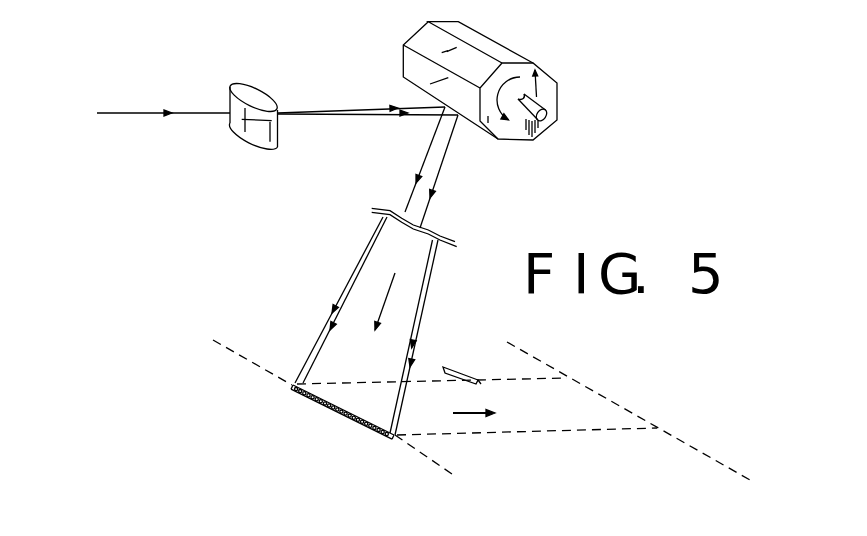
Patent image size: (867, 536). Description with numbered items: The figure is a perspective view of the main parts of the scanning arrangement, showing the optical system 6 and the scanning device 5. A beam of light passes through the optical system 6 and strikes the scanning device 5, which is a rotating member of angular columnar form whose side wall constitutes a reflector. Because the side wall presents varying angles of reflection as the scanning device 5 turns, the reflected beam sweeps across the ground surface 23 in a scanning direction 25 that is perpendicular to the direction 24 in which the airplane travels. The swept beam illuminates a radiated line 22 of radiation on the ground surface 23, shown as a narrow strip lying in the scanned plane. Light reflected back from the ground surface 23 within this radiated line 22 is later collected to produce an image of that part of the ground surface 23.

The scanning device 5 is at (557, 82).
The optical system 6 is at (263, 92).
The radiated line of radiation 22 is at (368, 431).
The ground surface 23 is at (530, 430).
The direction of airplane travel 24 is at (463, 373).
The scanning direction 25 is at (489, 412).